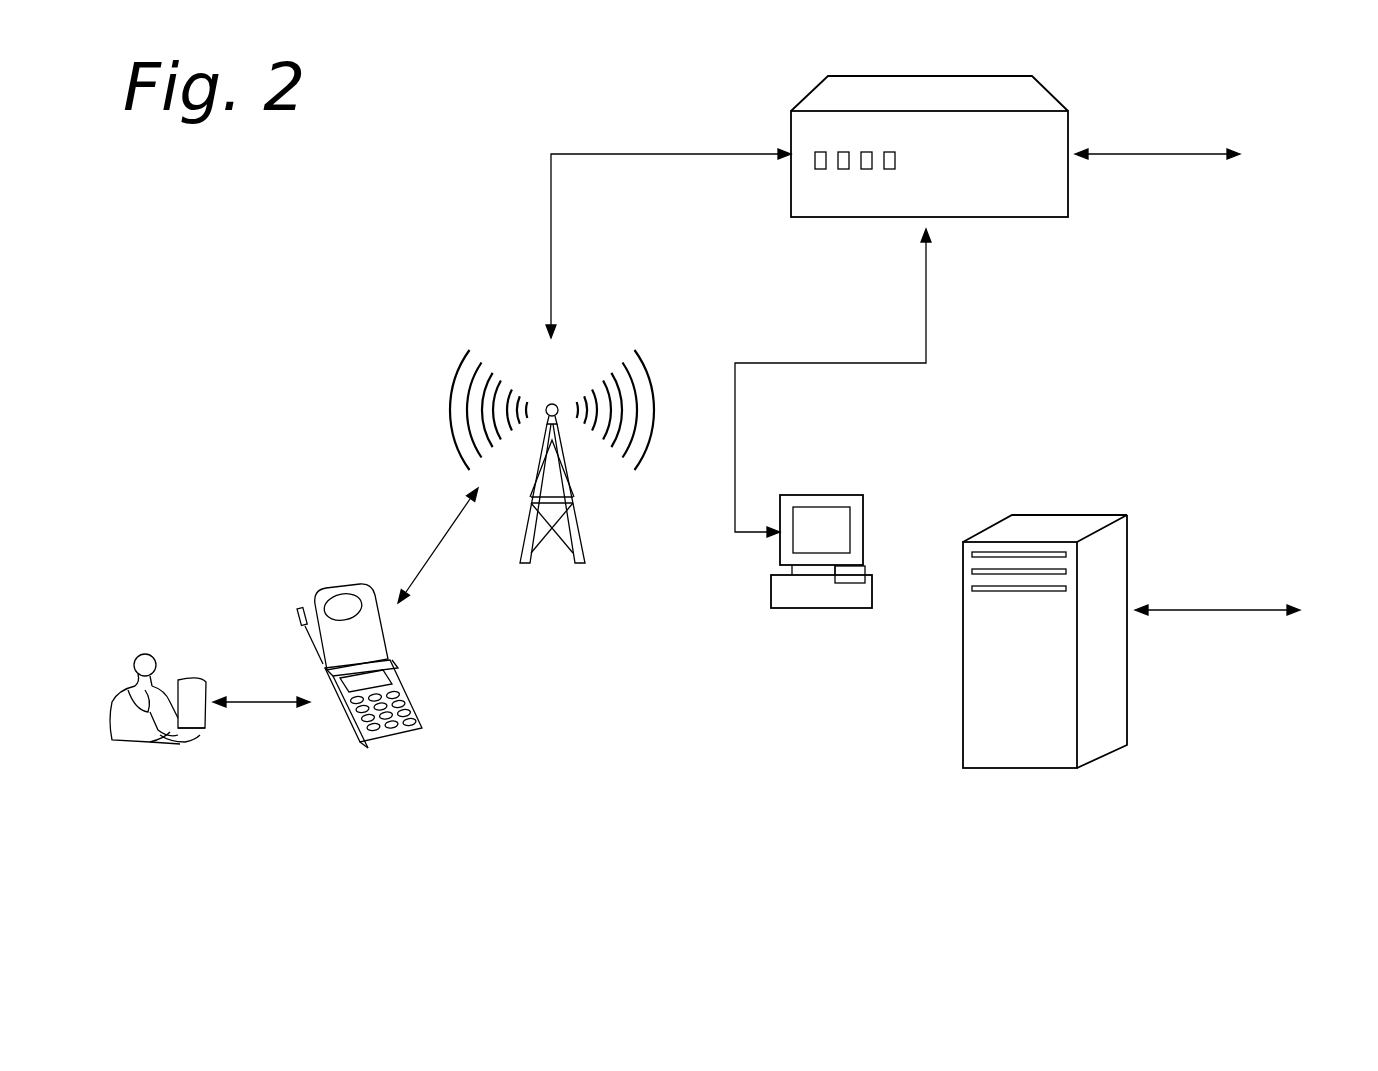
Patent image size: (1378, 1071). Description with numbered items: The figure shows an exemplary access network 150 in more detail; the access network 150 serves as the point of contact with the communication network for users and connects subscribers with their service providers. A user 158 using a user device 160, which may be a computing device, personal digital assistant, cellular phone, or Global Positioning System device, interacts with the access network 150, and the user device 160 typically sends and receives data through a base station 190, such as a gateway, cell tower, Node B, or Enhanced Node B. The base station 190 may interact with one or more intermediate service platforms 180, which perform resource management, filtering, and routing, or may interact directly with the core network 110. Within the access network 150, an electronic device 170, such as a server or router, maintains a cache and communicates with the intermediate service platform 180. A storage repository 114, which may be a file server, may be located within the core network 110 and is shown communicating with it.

The core network 110 is at (1214, 384).
The storage repository 114 is at (1127, 692).
The access network 150 is at (860, 876).
The user 158 is at (153, 750).
The user device 160 is at (370, 742).
The electronic device 170 is at (838, 490).
The intermediate service platform 180 is at (851, 93).
The base station 190 is at (483, 340).